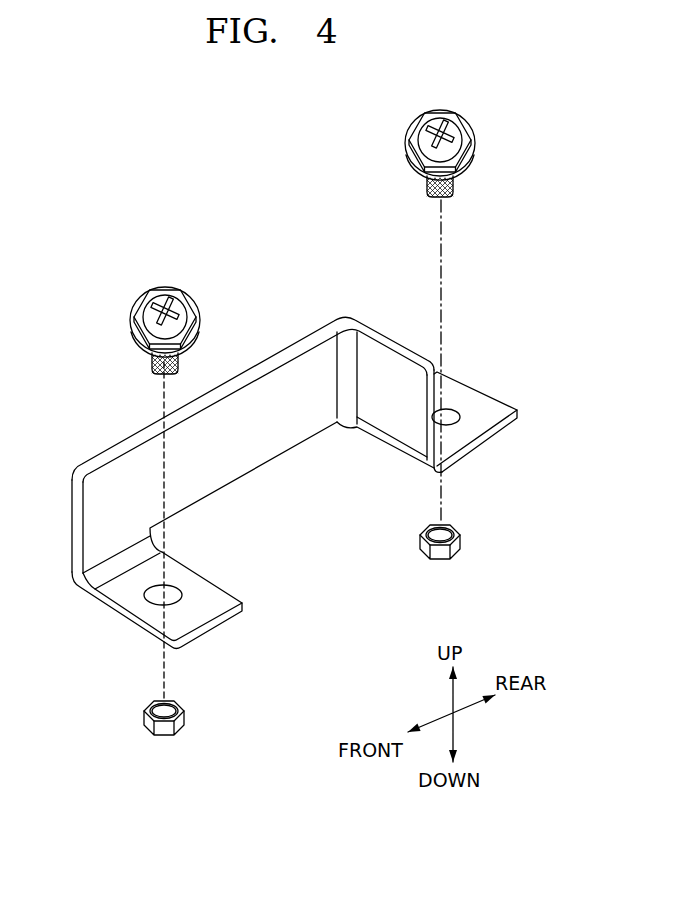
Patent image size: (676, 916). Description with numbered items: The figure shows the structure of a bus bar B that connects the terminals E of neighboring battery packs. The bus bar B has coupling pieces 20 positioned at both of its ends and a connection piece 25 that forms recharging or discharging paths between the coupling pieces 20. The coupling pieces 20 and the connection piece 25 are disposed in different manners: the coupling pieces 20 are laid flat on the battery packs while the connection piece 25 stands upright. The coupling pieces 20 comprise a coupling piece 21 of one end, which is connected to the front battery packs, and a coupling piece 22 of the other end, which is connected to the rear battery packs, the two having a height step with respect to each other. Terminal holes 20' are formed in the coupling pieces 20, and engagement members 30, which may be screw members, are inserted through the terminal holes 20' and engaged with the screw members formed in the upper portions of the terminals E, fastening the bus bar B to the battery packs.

The bus bar B is at (259, 345).
The coupling pieces 20 is at (299, 516).
The terminal hole 20' is at (192, 567).
The coupling piece of one end 21 is at (128, 603).
The coupling piece of the other end 22 is at (493, 408).
The connection piece 25 is at (278, 438).
The engagement member 30 is at (476, 147).
The terminal E is at (456, 533).